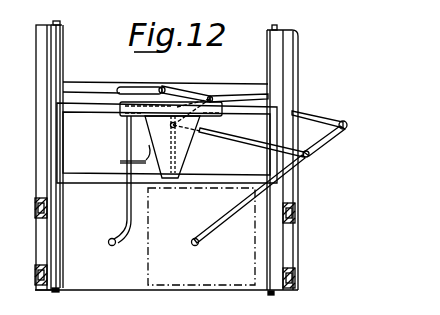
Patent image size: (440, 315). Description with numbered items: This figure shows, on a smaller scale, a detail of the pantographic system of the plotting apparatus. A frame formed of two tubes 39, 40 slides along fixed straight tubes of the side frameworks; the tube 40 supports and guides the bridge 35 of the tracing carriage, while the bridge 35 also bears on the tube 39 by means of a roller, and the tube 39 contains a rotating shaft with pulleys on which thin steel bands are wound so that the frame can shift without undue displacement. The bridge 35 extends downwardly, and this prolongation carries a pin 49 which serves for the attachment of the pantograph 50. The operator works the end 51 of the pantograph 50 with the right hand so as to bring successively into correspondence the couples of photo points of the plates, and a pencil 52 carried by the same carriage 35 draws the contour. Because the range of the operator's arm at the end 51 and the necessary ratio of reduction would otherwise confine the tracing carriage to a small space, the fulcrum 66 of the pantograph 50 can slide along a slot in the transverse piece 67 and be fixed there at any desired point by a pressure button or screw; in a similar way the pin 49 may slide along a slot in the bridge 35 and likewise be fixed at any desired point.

The bridge 35 is at (171, 113).
The tube 39 is at (86, 174).
The tube 40 is at (98, 106).
The pin 49 is at (177, 138).
The pantograph 50 is at (315, 118).
The end of the pantograph 51 is at (193, 245).
The pencil 52 is at (109, 244).
The fulcrum 66 is at (162, 86).
The transverse piece 67 is at (94, 88).